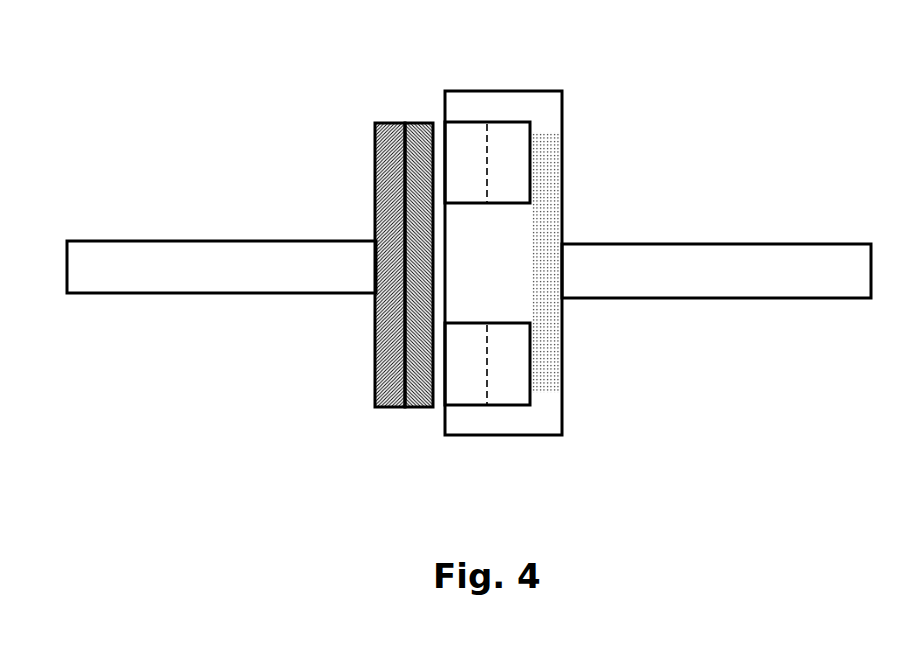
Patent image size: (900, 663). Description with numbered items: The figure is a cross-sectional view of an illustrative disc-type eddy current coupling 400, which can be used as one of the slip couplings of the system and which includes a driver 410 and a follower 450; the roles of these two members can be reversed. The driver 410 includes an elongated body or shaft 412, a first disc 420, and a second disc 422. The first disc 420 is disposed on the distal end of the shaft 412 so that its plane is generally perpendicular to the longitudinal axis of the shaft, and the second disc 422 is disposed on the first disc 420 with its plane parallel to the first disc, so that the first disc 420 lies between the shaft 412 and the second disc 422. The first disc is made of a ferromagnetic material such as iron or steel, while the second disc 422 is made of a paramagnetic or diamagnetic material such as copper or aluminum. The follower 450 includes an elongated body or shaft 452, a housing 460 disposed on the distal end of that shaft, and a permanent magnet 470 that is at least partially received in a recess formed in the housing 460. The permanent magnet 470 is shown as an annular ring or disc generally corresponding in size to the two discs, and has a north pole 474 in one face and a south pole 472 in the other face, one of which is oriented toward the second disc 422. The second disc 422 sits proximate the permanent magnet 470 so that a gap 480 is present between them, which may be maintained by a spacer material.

The eddy current coupling 400 is at (168, 52).
The driver 410 is at (152, 219).
The shaft 412 is at (130, 279).
The first disc 420 is at (387, 178).
The second disc 422 is at (425, 132).
The follower 450 is at (769, 224).
The shaft 452 is at (852, 284).
The housing 460 is at (550, 213).
The permanent magnet 470 is at (565, 63).
The south pole 472 is at (502, 133).
The north pole 474 is at (468, 133).
The gap 480 is at (434, 424).